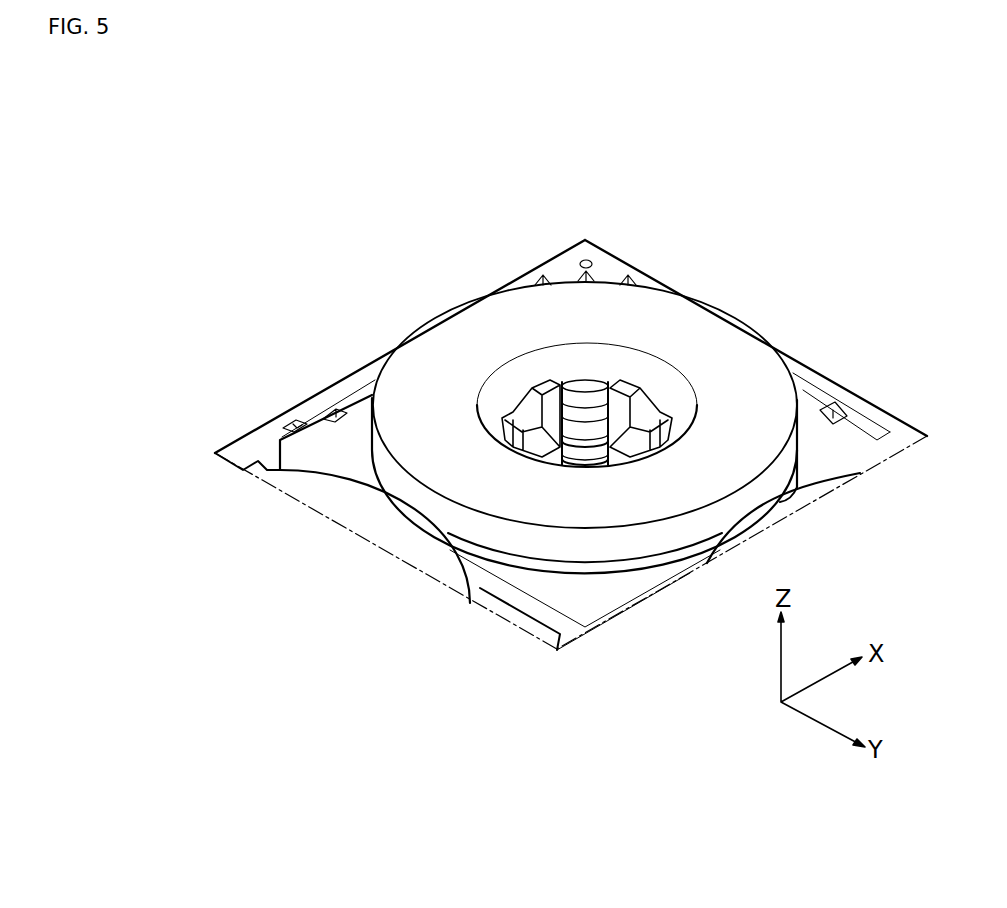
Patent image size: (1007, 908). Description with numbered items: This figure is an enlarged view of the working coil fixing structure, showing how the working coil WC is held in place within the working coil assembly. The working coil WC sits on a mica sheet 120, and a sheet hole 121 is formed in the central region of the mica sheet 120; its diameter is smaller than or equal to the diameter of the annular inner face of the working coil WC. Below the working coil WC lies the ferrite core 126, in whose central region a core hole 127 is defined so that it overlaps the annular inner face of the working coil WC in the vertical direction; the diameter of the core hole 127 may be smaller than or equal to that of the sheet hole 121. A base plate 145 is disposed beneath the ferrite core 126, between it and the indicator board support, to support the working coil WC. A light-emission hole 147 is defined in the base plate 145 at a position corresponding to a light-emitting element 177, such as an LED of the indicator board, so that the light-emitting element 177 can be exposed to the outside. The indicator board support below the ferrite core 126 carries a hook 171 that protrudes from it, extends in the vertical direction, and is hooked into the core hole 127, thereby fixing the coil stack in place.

The mica sheet 120 is at (500, 412).
The sheet hole 121 is at (568, 390).
The ferrite core 126 is at (313, 450).
The core hole 127 is at (588, 440).
The base plate 145 is at (603, 267).
The light-emission hole 147 is at (300, 417).
The hook 171 is at (657, 410).
The light-emitting element 177 is at (333, 413).
The working coil WC is at (566, 300).